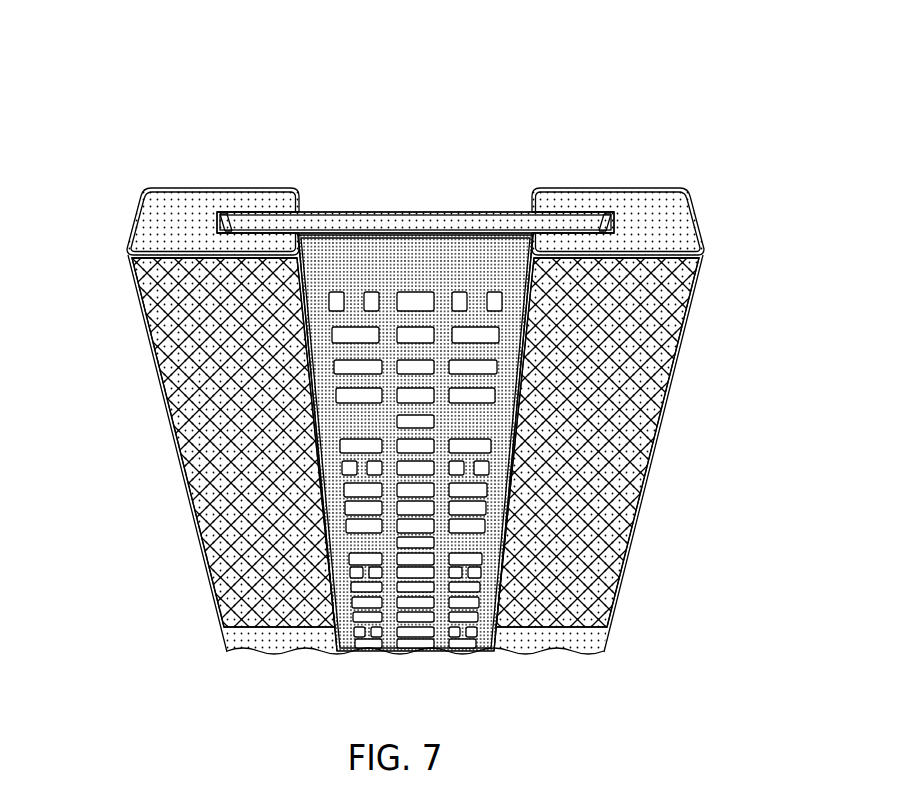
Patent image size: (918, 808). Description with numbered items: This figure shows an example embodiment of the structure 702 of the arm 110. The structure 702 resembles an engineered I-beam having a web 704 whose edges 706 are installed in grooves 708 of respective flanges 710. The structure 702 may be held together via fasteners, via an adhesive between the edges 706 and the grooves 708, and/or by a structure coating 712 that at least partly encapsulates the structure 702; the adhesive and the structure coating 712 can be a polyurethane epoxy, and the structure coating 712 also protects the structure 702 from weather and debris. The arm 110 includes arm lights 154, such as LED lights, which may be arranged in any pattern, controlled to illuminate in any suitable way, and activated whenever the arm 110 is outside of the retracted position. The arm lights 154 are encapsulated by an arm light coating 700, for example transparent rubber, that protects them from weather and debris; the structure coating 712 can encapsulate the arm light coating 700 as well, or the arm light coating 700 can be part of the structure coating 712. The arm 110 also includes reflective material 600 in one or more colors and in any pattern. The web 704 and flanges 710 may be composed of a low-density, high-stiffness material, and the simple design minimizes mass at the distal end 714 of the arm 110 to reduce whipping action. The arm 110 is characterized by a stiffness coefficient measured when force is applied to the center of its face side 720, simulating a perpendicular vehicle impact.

The arm 110 is at (577, 92).
The structure 702 is at (663, 172).
The flanges 710 is at (162, 225).
The web 704 is at (453, 223).
The edges 706 is at (265, 222).
The grooves 708 is at (228, 230).
The arm light coating 700 is at (360, 253).
The arm lights 154 is at (358, 338).
The face side 720 is at (345, 618).
The reflective material 600 is at (188, 383).
The distal end 714 is at (188, 273).
The structure coating 712 is at (180, 208).